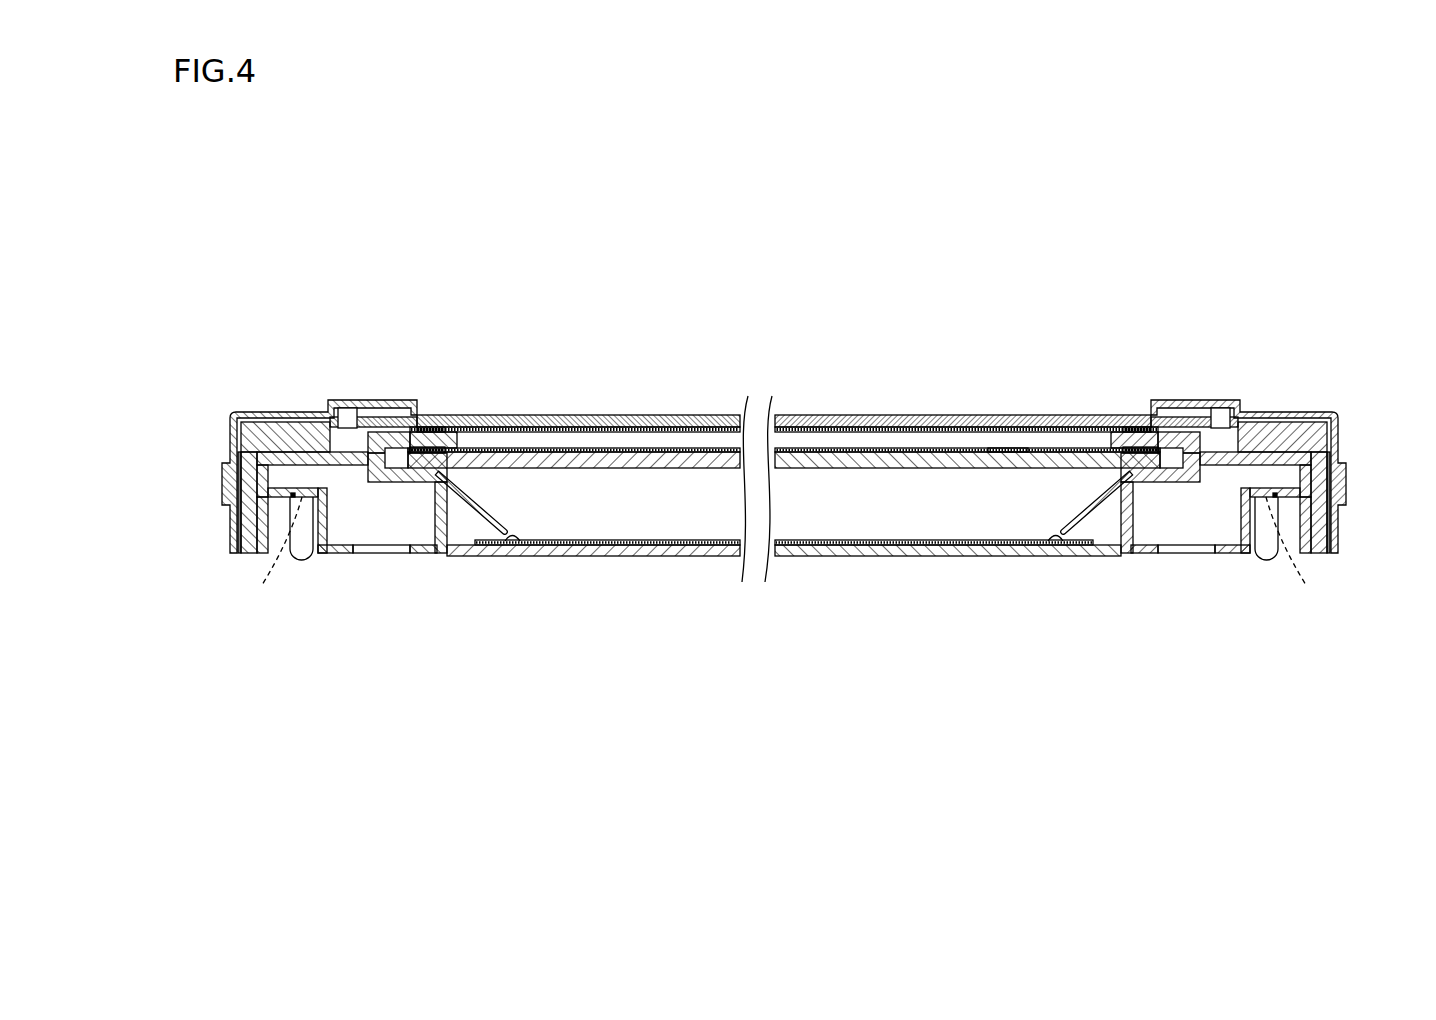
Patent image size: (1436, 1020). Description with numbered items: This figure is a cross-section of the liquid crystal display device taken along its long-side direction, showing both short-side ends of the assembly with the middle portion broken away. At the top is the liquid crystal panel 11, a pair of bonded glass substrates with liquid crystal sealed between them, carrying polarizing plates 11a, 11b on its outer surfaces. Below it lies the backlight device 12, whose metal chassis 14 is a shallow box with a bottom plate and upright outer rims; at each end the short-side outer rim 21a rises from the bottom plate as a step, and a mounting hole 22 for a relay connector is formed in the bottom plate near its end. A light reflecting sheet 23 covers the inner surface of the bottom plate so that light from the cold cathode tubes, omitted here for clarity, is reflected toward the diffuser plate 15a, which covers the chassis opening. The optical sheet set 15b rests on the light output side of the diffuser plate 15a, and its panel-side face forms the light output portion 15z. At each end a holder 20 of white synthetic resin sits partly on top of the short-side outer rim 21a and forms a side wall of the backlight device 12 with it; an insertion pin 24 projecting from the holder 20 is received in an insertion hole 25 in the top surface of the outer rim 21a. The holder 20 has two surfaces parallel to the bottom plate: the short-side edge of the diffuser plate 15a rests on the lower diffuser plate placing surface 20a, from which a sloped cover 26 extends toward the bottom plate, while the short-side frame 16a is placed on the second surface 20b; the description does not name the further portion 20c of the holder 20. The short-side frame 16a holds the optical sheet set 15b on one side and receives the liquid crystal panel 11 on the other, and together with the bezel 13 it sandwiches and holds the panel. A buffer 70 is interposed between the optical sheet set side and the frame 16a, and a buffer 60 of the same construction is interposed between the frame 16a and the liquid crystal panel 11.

The liquid crystal panel 11 is at (703, 403).
The polarizing plate 11a is at (667, 418).
The polarizing plate 11b is at (640, 427).
The backlight device 12 is at (948, 587).
The bezel 13 is at (232, 458).
The chassis 14 is at (547, 556).
The diffuser plate 15a is at (574, 418).
The optical sheet set 15b is at (583, 450).
The light output portion 15z is at (1010, 406).
The short-side frame 16a is at (250, 484).
The holder 20 is at (430, 540).
The diffuser plate placing surface 20a is at (392, 465).
The second surface 20b is at (280, 448).
The top portion 20c is at (272, 418).
The short-side outer rim 21a is at (258, 527).
The mounting hole 22 is at (410, 547).
The light reflecting sheet 23 is at (517, 538).
The insertion pin 24 is at (285, 543).
The insertion hole 25 is at (273, 556).
The sloped cover 26 is at (485, 512).
The buffer 60 is at (437, 428).
The buffer 70 is at (450, 447).